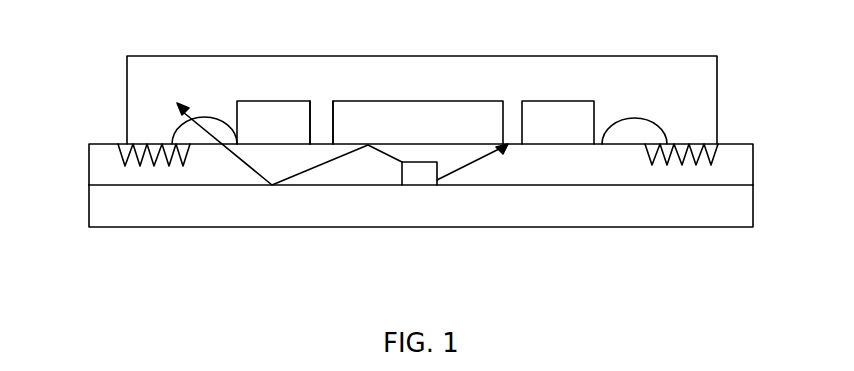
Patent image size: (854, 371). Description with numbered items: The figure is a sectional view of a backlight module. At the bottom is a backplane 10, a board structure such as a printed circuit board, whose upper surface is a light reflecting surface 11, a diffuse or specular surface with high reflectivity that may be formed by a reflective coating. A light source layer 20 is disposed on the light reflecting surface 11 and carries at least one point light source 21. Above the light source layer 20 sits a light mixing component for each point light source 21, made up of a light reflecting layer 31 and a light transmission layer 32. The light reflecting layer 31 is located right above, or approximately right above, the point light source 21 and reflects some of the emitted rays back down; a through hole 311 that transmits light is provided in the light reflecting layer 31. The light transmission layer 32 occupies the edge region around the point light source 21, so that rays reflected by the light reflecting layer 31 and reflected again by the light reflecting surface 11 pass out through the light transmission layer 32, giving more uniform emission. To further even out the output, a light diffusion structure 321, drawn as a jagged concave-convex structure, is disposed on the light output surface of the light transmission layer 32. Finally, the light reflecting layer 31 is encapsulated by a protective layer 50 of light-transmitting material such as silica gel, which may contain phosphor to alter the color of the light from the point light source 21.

The backplane 10 is at (190, 214).
The light reflecting surface 11 is at (117, 186).
The light source layer 20 is at (492, 167).
The point light source 21 is at (418, 173).
The light reflecting layer 31 is at (397, 120).
The through hole 311 is at (318, 120).
The light transmission layer 32 is at (692, 173).
The light diffusion structure 321 is at (155, 145).
The protective layer 50 is at (680, 98).